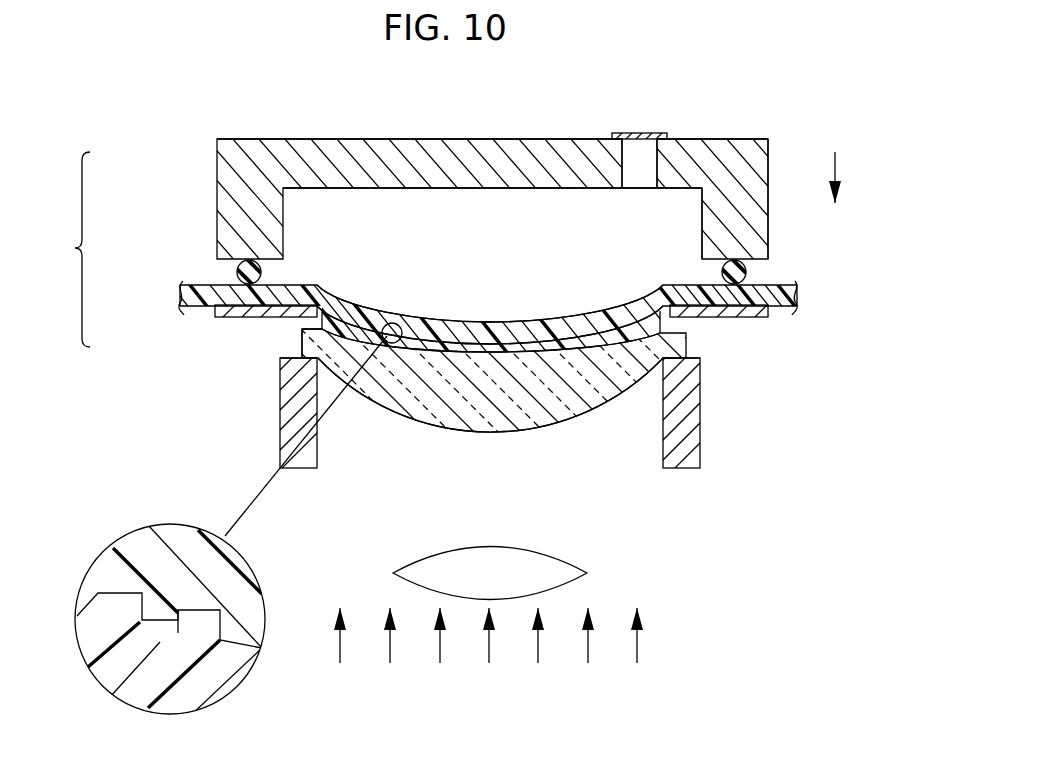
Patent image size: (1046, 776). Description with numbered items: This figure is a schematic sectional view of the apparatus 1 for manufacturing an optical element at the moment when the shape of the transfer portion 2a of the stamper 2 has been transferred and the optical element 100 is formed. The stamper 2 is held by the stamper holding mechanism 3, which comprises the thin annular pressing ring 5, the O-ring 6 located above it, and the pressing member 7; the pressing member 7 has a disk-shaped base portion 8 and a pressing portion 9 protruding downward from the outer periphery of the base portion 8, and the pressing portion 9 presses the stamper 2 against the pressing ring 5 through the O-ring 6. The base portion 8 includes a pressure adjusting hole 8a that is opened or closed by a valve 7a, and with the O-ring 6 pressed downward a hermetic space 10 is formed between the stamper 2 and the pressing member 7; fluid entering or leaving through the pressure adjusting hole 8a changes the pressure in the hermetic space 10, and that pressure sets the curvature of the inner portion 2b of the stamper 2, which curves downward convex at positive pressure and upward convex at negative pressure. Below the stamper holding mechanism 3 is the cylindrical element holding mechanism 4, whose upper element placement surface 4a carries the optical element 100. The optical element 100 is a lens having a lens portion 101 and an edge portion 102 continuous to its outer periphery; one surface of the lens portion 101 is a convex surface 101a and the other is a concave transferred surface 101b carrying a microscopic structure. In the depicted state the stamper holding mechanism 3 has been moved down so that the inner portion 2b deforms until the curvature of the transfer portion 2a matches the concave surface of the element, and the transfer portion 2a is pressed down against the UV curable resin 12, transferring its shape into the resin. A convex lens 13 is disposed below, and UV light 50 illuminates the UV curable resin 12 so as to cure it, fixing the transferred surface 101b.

The apparatus for manufacturing an optical element 1 is at (752, 58).
The stamper 2 is at (780, 298).
The transfer portion 2a is at (655, 320).
The inner portion of the stamper 2b is at (637, 313).
The stamper holding mechanism 3 is at (476, 191).
The element holding mechanism 4 is at (700, 456).
The element placement surface 4a is at (695, 358).
The pressing ring 5 is at (217, 320).
The O-ring 6 is at (237, 274).
The pressing member 7 is at (222, 172).
The valve 7a is at (663, 136).
The base portion 8 is at (432, 139).
The pressure adjusting hole 8a is at (622, 153).
The pressing portion 9 is at (752, 226).
The hermetic space 10 is at (463, 242).
The UV curable resin 12 is at (352, 320).
The convex lens 13 is at (558, 567).
The UV light 50 is at (390, 645).
The optical element 100 is at (486, 479).
The lens portion 101 is at (587, 404).
The convex surface 101a is at (413, 419).
The transferred surface 101b is at (462, 342).
The edge portion 102 is at (302, 336).